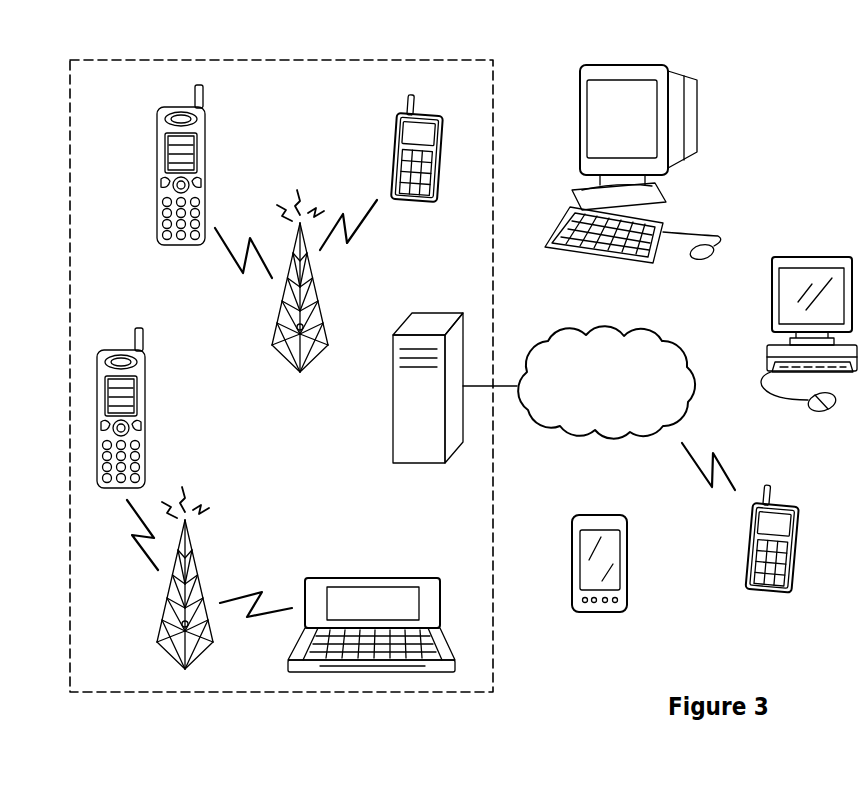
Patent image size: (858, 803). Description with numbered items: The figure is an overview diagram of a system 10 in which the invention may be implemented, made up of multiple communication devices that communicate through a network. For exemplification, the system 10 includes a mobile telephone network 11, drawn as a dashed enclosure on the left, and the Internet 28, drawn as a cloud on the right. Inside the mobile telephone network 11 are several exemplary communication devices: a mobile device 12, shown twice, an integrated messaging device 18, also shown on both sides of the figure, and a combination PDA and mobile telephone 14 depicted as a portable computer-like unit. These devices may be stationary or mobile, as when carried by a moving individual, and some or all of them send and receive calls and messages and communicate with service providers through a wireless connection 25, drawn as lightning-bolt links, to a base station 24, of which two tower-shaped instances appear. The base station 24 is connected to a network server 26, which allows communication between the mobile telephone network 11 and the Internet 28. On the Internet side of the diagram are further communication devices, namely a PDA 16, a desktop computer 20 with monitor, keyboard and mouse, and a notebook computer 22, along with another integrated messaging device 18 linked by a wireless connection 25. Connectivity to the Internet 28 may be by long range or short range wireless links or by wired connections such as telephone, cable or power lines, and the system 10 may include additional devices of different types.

The system 10 is at (847, 469).
The mobile telephone network 11 is at (101, 95).
The mobile device 12 is at (207, 173).
The combination PDA and mobile telephone 14 is at (369, 578).
The PDA 16 is at (628, 560).
The integrated messaging device 18 is at (396, 153).
The desktop computer 20 is at (697, 110).
The notebook computer 22 is at (812, 257).
The base station 24 is at (314, 291).
The wireless connection 25 is at (143, 556).
The network server 26 is at (393, 398).
The Internet 28 is at (638, 331).